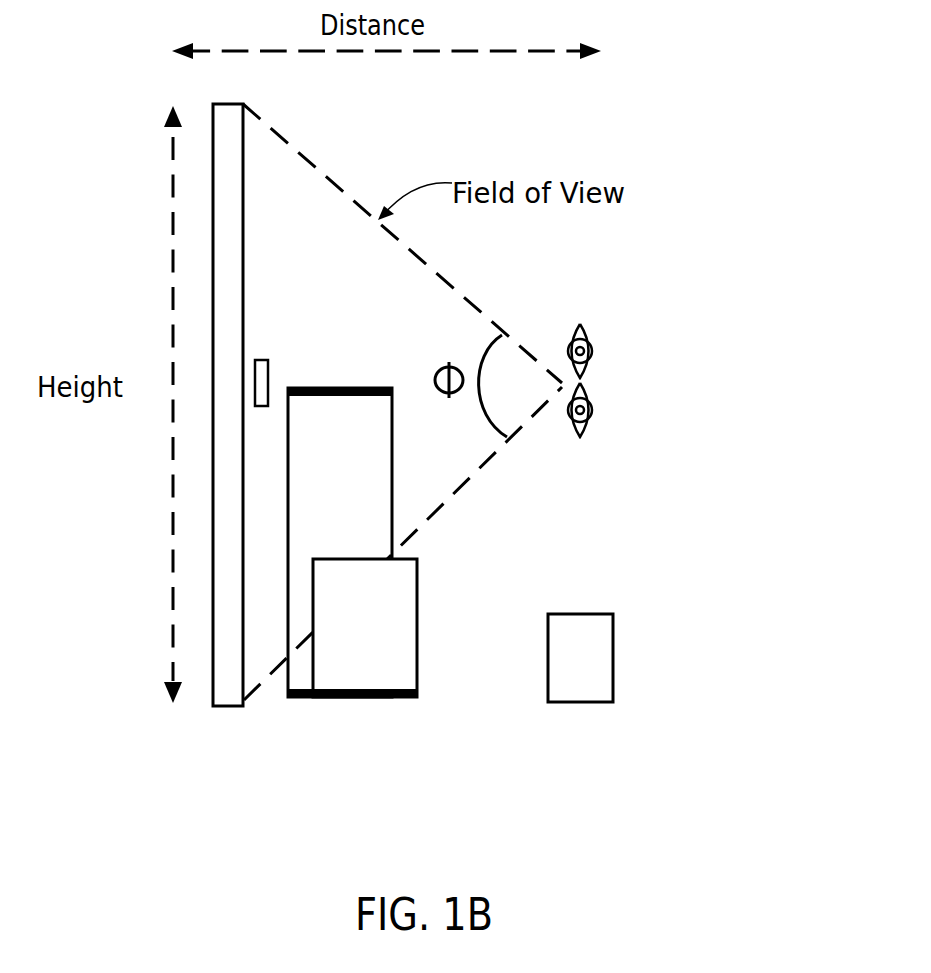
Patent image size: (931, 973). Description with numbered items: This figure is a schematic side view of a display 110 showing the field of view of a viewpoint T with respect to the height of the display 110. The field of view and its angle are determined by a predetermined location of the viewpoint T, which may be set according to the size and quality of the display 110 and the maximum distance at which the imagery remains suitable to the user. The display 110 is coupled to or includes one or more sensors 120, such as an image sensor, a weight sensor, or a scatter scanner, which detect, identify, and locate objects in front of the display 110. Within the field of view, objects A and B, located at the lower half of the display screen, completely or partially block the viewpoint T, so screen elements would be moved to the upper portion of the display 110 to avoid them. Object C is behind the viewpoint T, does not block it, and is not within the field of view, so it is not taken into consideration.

The display 110 is at (242, 103).
The sensors 120 is at (261, 360).
The object A is at (340, 542).
The object B is at (365, 628).
The object C is at (580, 658).
The viewpoint T is at (580, 322).